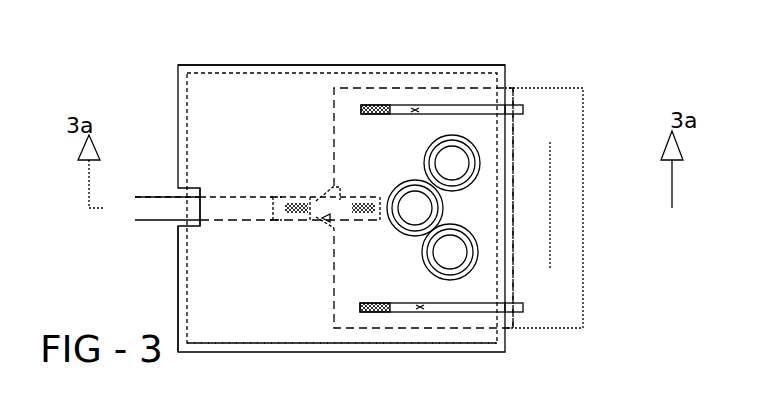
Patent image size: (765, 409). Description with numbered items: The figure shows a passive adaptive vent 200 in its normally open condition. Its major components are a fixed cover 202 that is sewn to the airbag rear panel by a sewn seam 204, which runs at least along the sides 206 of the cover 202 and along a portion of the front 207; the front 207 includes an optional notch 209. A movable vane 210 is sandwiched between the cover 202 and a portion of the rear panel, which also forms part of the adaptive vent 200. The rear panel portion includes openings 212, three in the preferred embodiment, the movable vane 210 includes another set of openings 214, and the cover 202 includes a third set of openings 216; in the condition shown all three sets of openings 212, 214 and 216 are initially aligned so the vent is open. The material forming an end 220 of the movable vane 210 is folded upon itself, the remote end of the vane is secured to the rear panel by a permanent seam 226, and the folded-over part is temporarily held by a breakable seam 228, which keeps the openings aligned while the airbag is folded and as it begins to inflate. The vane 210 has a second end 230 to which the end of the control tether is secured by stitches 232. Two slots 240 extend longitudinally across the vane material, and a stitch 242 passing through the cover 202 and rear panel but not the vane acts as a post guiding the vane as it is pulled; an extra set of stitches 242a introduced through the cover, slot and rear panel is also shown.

The adaptive vent 200 is at (518, 72).
The cover 202 is at (228, 100).
The sewn seam 204 is at (294, 64).
The sides 206 is at (250, 350).
The front 207 is at (175, 256).
The notch 209 is at (200, 193).
The movable vane 210 is at (197, 285).
The openings 212 is at (440, 152).
The openings 214 is at (460, 143).
The openings 216 is at (425, 156).
The end 220 is at (562, 127).
The permanent seam 226 is at (515, 157).
The breakable seam 228 is at (550, 270).
The second end 230 is at (334, 126).
The stitches 232 is at (396, 405).
The slots 240 is at (402, 107).
The stitch 242 is at (373, 105).
The stitches 242a is at (415, 111).